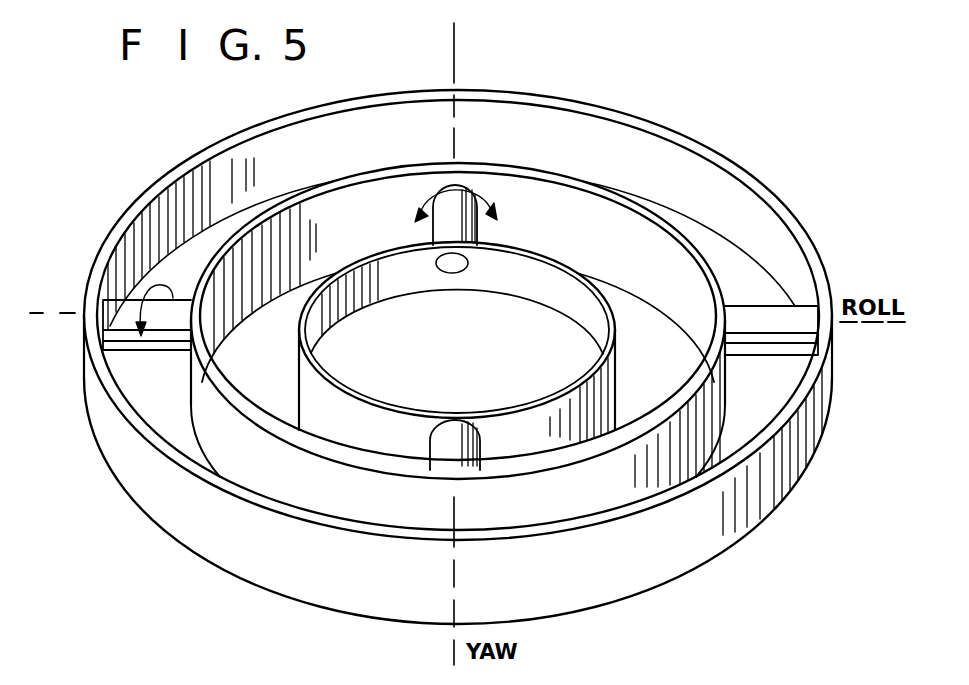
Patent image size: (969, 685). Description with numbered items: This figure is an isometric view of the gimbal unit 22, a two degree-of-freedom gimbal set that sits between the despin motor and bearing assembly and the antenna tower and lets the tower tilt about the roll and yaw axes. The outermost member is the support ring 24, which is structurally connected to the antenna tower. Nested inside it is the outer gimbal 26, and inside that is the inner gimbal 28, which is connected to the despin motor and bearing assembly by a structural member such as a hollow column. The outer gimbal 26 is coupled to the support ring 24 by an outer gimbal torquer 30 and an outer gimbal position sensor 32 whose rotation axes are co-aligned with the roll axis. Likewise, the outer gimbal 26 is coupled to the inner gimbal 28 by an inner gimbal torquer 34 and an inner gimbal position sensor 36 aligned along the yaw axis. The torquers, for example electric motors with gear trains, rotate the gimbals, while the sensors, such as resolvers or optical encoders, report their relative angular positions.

The gimbal unit 22 is at (697, 140).
The support ring 24 is at (672, 565).
The outer gimbal 26 is at (197, 405).
The inner gimbal 28 is at (390, 283).
The outer gimbal torquer 30 is at (787, 313).
The outer gimbal position sensor 32 is at (113, 313).
The inner gimbal torquer 34 is at (497, 216).
The inner gimbal position sensor 36 is at (456, 432).